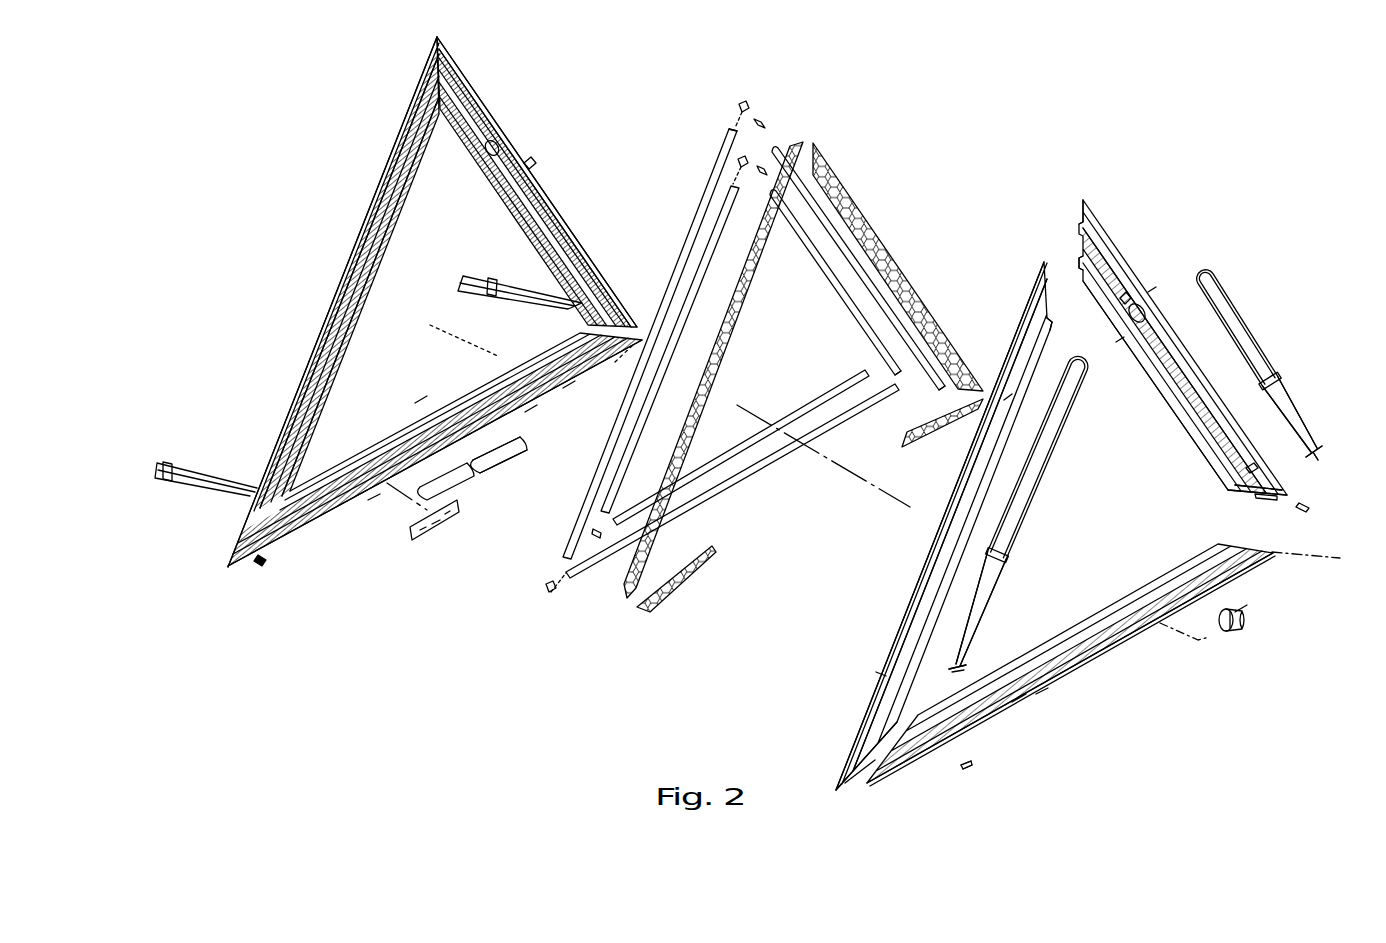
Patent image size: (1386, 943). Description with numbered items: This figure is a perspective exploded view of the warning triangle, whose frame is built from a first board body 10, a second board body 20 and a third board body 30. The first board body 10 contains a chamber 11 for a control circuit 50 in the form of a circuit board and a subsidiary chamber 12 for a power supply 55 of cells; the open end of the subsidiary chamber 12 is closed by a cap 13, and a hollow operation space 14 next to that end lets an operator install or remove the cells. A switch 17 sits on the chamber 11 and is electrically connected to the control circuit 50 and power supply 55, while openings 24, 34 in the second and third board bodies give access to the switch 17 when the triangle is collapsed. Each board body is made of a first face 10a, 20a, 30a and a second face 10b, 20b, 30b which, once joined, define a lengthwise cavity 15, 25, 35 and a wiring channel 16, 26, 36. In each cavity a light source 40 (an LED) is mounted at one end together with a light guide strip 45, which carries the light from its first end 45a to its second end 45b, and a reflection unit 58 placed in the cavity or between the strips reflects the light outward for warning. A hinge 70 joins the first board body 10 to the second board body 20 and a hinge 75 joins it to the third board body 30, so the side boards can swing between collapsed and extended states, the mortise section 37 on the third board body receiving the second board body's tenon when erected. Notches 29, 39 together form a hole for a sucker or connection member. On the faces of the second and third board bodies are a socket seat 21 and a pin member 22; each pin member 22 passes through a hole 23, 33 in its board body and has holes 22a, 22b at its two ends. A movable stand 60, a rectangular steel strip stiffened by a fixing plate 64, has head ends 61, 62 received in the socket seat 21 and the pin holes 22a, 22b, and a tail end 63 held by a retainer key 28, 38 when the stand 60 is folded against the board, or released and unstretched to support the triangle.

The first board body 10 is at (375, 462).
The first face of the first board body 10a is at (1000, 716).
The second face of the first board body 10b is at (327, 518).
The chamber 11 is at (373, 500).
The subsidiary chamber 12 is at (520, 447).
The cap 13 is at (1250, 622).
The hollow operation space 14 is at (530, 412).
The cavity of the first board body 15 is at (420, 400).
The channel of the first board body 16 is at (512, 352).
The switch 17 is at (1020, 700).
The second board body 20 is at (295, 283).
The first face of the second board body 20a is at (968, 488).
The second face of the second board body 20b is at (368, 208).
The socket seat 21 is at (870, 705).
The pin member 22 is at (1308, 509).
The hole of the pin member 22a is at (975, 773).
The hole of the pin member 22b is at (962, 770).
The hole of the second board body 23 is at (880, 672).
The opening of the second board body 24 is at (300, 355).
The cavity of the second board body 25 is at (345, 283).
The channel of the second board body 26 is at (415, 105).
The retainer key of the second board body 28 is at (1012, 396).
The notch of the second board body 29 is at (1052, 322).
The third board body 30 is at (476, 80).
The first face of the third board body 30a is at (1180, 380).
The second face of the third board body 30b is at (560, 200).
The hole of the third board body 33 is at (1246, 468).
The opening of the third board body 34 is at (532, 162).
The cavity of the third board body 35 is at (510, 118).
The channel of the third board body 36 is at (505, 100).
The mortise section 37 is at (1078, 208).
The retainer key of the third board body 38 is at (1137, 303).
The notch of the third board body 39 is at (1078, 255).
The light source 40 is at (762, 110).
The light guide strip 45 is at (690, 213).
The first end of the light guide strip 45a is at (785, 148).
The second end of the light guide strip 45b is at (722, 142).
The control circuit 50 is at (420, 541).
The power supply 55 is at (458, 470).
The reflection unit 58 is at (908, 232).
The movable stand 60 is at (485, 275).
The head end of the stand 61 is at (945, 662).
The head end of the stand 62 is at (968, 672).
The tail end of the stand 63 is at (1152, 290).
The fixing plate 64 is at (168, 462).
The hinge 70 is at (268, 566).
The hinge 75 is at (1255, 496).